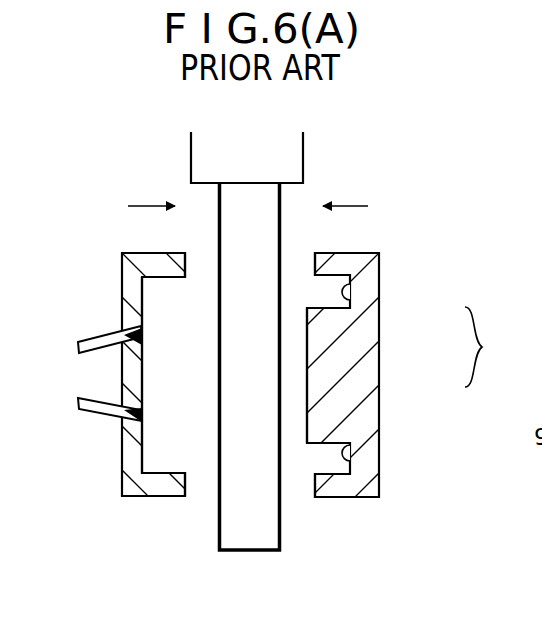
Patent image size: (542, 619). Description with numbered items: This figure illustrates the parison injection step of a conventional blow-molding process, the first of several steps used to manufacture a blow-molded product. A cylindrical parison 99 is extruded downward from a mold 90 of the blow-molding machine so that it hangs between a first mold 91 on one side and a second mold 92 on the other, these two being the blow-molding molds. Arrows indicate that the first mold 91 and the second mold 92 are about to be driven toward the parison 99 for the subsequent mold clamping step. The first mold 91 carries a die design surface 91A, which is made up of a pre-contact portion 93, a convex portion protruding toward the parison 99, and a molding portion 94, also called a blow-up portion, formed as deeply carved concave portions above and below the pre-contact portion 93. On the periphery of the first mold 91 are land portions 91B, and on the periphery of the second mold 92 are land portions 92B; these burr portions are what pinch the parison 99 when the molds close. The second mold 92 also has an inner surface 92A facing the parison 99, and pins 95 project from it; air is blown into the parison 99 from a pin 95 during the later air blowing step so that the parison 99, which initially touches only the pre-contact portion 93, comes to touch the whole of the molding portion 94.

The mold of blow-molding machine 90 is at (294, 157).
The first mold 91 is at (372, 280).
The die design surface 91A is at (500, 347).
The land portion 91B is at (316, 258).
The second mold 92 is at (128, 278).
The inner surface of claw 92A is at (142, 446).
The land portion 92B is at (187, 258).
The pre-contact portion 93 is at (307, 362).
The molding portion 94 is at (342, 290).
The pin 95 is at (95, 411).
The parison 99 is at (221, 530).